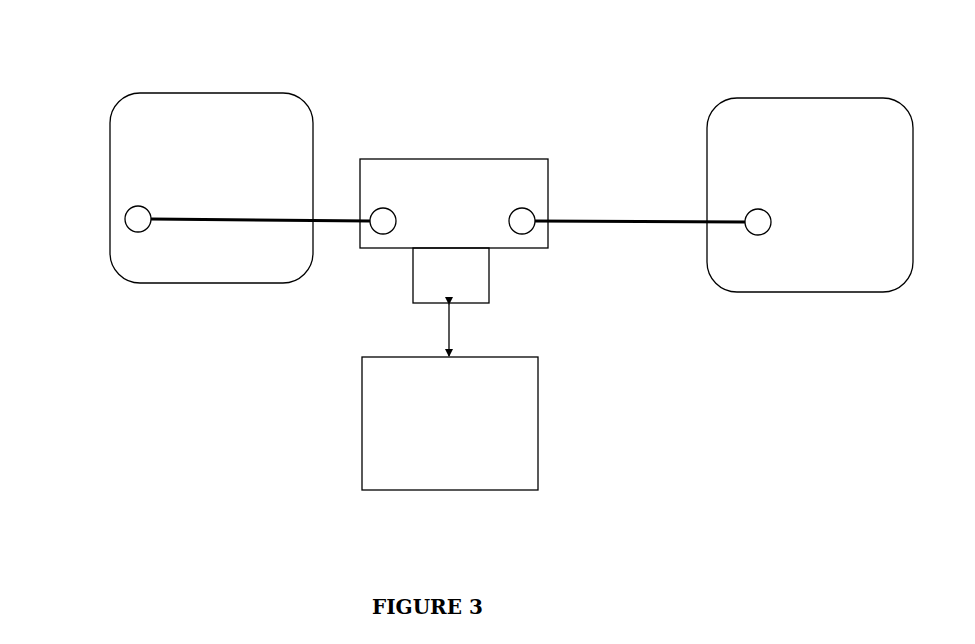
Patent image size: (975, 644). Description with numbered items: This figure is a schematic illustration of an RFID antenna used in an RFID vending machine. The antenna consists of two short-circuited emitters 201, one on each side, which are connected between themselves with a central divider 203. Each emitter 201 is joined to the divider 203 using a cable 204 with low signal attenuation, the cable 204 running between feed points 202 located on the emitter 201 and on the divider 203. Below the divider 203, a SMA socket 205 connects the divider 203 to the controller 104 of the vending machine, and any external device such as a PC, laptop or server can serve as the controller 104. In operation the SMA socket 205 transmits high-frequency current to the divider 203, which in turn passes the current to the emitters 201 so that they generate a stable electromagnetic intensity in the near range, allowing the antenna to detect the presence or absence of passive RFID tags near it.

The controller 104 is at (450, 423).
The short-circuited emitter 201 is at (210, 93).
The feed point 202 is at (128, 209).
The divider 203 is at (548, 160).
The cable 204 is at (448, 213).
The SMA socket 205 is at (489, 303).